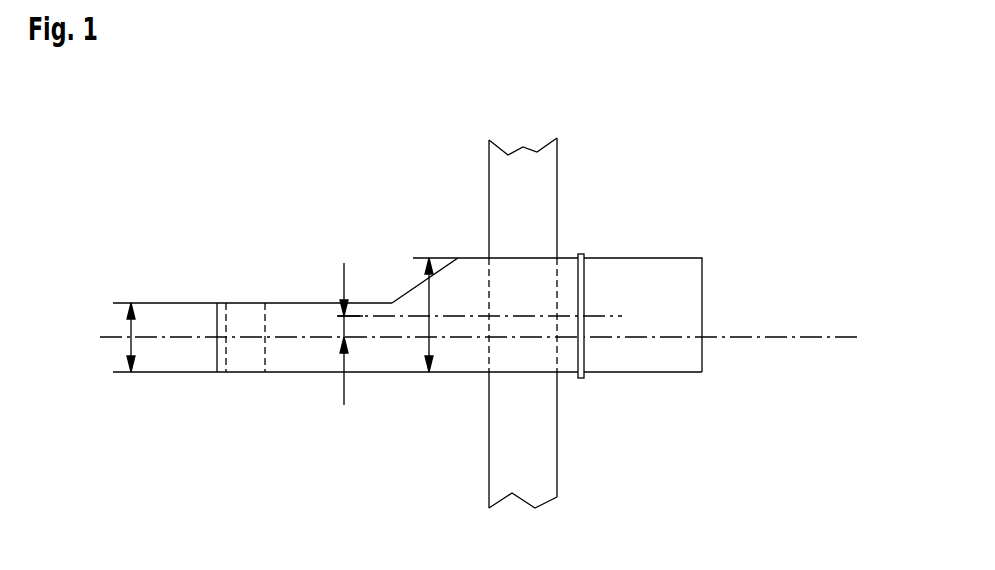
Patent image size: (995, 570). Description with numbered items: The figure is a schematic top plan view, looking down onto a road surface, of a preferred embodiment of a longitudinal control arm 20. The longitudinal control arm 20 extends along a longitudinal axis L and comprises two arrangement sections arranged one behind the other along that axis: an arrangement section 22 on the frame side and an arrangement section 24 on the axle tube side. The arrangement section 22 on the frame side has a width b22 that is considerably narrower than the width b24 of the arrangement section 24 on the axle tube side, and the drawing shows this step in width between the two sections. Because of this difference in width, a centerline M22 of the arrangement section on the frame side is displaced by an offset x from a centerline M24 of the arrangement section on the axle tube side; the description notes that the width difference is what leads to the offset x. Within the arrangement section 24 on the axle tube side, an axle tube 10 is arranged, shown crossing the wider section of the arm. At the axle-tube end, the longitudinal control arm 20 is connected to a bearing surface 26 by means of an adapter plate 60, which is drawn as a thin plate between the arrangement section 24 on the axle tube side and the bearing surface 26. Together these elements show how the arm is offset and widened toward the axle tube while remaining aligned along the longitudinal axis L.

The axle tube 10 is at (540, 182).
The longitudinal control arm 20 is at (454, 293).
The arrangement section on the frame side 22 is at (247, 375).
The arrangement section on the axle tube side 24 is at (512, 368).
The bearing surface 26 is at (673, 358).
The adapter plate 60 is at (580, 272).
The centerline of the arrangement section on the frame side M22 is at (212, 337).
The centerline of the arrangement section on the axle tube side M24 is at (618, 316).
The width of the arrangement section on the frame side b22 is at (131, 345).
The width of the arrangement section on the axle tube side b24 is at (430, 345).
The offset x is at (344, 396).
The longitudinal axis L is at (765, 337).